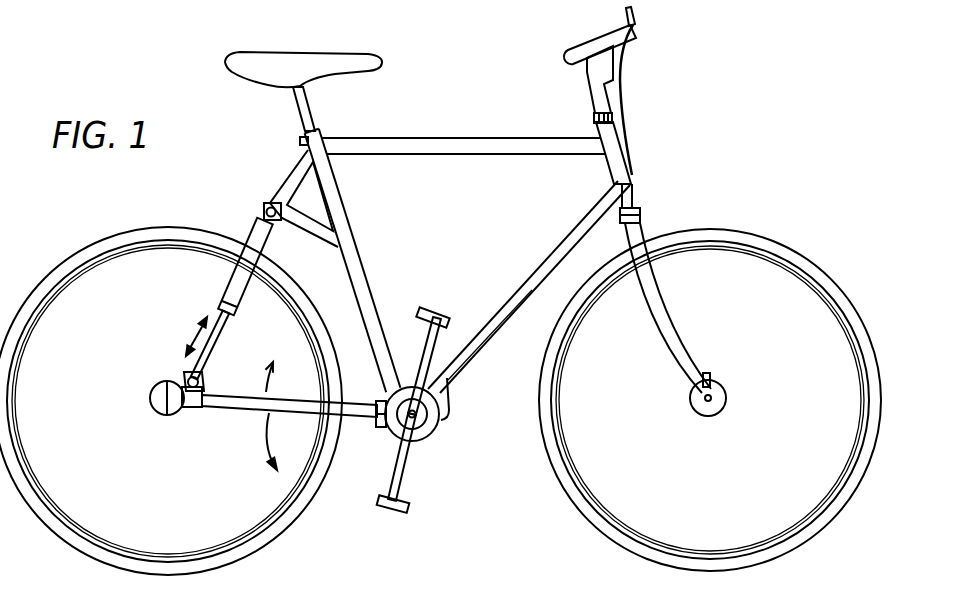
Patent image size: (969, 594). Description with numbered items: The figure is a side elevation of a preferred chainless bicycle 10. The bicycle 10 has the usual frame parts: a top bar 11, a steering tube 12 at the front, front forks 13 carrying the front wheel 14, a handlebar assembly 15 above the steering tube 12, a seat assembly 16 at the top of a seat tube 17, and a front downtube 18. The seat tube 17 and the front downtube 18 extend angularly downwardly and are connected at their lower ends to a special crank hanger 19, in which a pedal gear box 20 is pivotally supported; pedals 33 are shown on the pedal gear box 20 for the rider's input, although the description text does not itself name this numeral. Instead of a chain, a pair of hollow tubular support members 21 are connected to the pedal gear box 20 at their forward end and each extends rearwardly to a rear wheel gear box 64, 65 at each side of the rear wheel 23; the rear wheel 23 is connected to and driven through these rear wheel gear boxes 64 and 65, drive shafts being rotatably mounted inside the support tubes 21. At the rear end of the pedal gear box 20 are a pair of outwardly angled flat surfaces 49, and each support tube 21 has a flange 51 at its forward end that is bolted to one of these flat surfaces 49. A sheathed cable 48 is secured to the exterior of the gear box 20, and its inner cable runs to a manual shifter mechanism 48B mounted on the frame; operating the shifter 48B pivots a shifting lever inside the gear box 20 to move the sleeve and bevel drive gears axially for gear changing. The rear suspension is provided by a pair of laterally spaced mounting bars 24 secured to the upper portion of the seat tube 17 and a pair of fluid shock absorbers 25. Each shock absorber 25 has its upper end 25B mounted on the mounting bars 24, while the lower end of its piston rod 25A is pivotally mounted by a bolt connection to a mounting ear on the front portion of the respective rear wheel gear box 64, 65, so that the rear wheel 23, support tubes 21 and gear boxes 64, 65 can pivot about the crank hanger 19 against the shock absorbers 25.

The chainless bicycle 10 is at (679, 196).
The top bar 11 is at (453, 138).
The steering tube 12 is at (628, 157).
The front forks 13 is at (660, 250).
The front wheel 14 is at (784, 243).
The handlebar assembly 15 is at (605, 89).
The seat assembly 16 is at (297, 108).
The seat tube 17 is at (341, 189).
The front downtube 18 is at (529, 287).
The crank hanger 19 is at (443, 398).
The pedal gear box 20 is at (436, 428).
The hollow tubular support members 21 is at (297, 416).
The rear wheel 23 is at (137, 228).
The mounting bars 24 is at (296, 184).
The fluid shock absorbers 25 is at (250, 297).
The piston rod 25A is at (222, 324).
The upper end 25B is at (264, 249).
The pedal 33 is at (419, 330).
The sheathed cable 48 is at (482, 353).
The manual shifter mechanism 48B is at (634, 21).
The outwardly angled flat surfaces 49 is at (380, 430).
The flange 51 is at (376, 398).
The rear wheel gear box 64 is at (163, 422).
The rear wheel gear box 65 is at (167, 416).